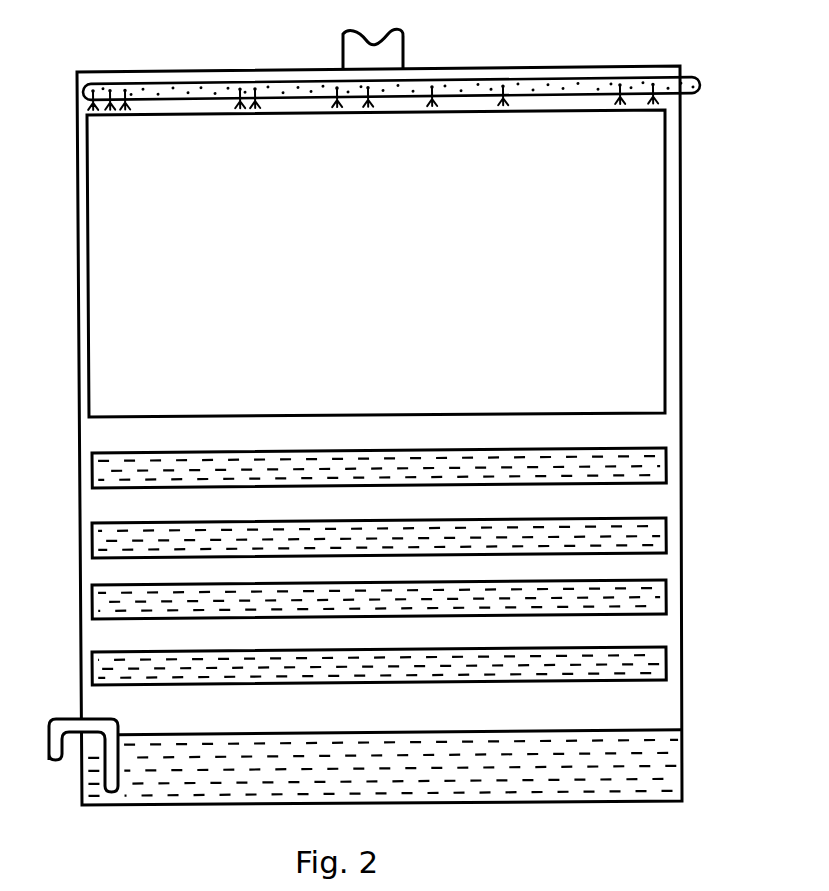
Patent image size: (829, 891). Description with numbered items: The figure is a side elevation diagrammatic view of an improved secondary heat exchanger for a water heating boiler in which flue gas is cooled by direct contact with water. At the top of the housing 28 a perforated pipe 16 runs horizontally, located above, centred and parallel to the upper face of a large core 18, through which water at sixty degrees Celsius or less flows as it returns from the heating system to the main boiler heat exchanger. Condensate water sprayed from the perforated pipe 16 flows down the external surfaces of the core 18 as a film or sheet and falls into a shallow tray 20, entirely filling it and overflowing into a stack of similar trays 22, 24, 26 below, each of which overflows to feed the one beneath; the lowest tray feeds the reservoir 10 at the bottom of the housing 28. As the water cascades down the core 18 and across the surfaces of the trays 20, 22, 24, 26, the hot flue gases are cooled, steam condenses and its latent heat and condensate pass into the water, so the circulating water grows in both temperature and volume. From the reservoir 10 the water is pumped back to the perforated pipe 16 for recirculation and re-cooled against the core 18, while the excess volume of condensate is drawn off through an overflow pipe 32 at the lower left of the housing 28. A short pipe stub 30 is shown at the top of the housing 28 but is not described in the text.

The reservoir 10 is at (368, 788).
The perforated pipe 16 is at (275, 83).
The core 18 is at (380, 277).
The shallow tray 20 is at (348, 483).
The tray 22 is at (346, 551).
The tray 24 is at (345, 614).
The tray 26 is at (345, 682).
The housing 28 is at (679, 315).
The inlet pipe 30 is at (405, 52).
The overflow pipe 32 is at (64, 720).